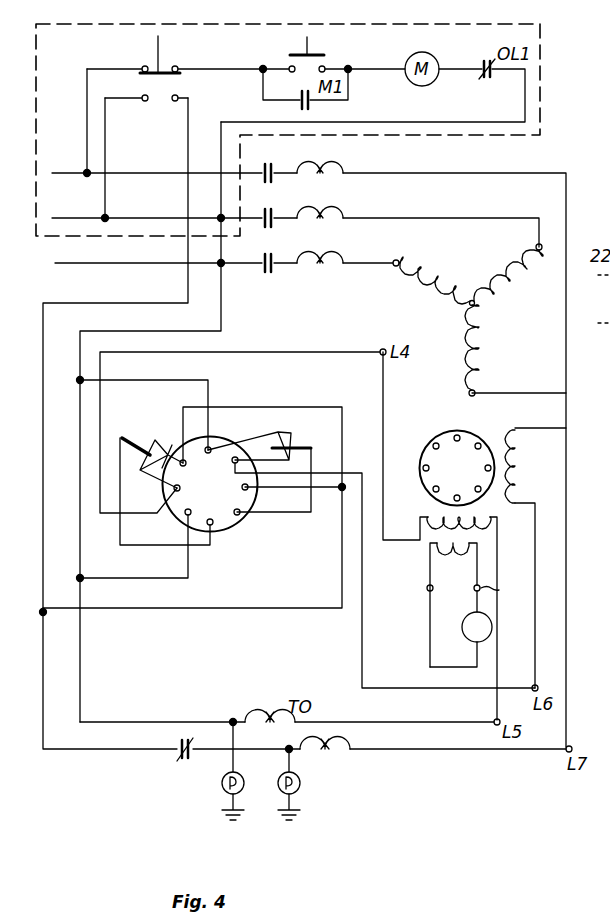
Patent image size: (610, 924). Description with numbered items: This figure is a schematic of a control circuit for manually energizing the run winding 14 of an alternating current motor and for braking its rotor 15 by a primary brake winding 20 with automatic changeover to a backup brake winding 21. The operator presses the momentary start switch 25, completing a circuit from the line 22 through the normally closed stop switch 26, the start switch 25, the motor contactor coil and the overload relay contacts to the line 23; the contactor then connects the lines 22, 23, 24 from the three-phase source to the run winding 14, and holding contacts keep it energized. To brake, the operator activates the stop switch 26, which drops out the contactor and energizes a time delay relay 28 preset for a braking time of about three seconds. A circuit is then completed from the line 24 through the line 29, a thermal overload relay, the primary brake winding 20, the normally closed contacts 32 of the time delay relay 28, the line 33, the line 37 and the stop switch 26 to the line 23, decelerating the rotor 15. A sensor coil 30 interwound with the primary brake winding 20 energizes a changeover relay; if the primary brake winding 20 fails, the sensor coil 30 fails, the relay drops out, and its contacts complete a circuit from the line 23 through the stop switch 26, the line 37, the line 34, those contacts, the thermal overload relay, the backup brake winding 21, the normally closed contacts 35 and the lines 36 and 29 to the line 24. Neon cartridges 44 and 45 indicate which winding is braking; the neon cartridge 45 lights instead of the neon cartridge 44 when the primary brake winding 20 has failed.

The run winding 14 is at (446, 304).
The rotor 15 is at (457, 468).
The primary brake winding 20 is at (412, 529).
The backup brake winding 21 is at (530, 468).
The line 22 is at (76, 173).
The line 23 is at (89, 218).
The line 24 is at (57, 268).
The momentary start switch 25 is at (330, 48).
The stop switch 26 is at (170, 56).
The time delay relay 28 is at (238, 538).
The line 29 is at (222, 297).
The sensor coil 30 is at (443, 561).
The normally closed contacts 32 is at (163, 438).
The line 33 is at (238, 407).
The line 34 is at (60, 753).
The normally closed contacts 35 is at (265, 428).
The line 36 is at (150, 381).
The line 37 is at (178, 300).
The neon cartridge 44 is at (217, 793).
The neon cartridge 45 is at (305, 787).